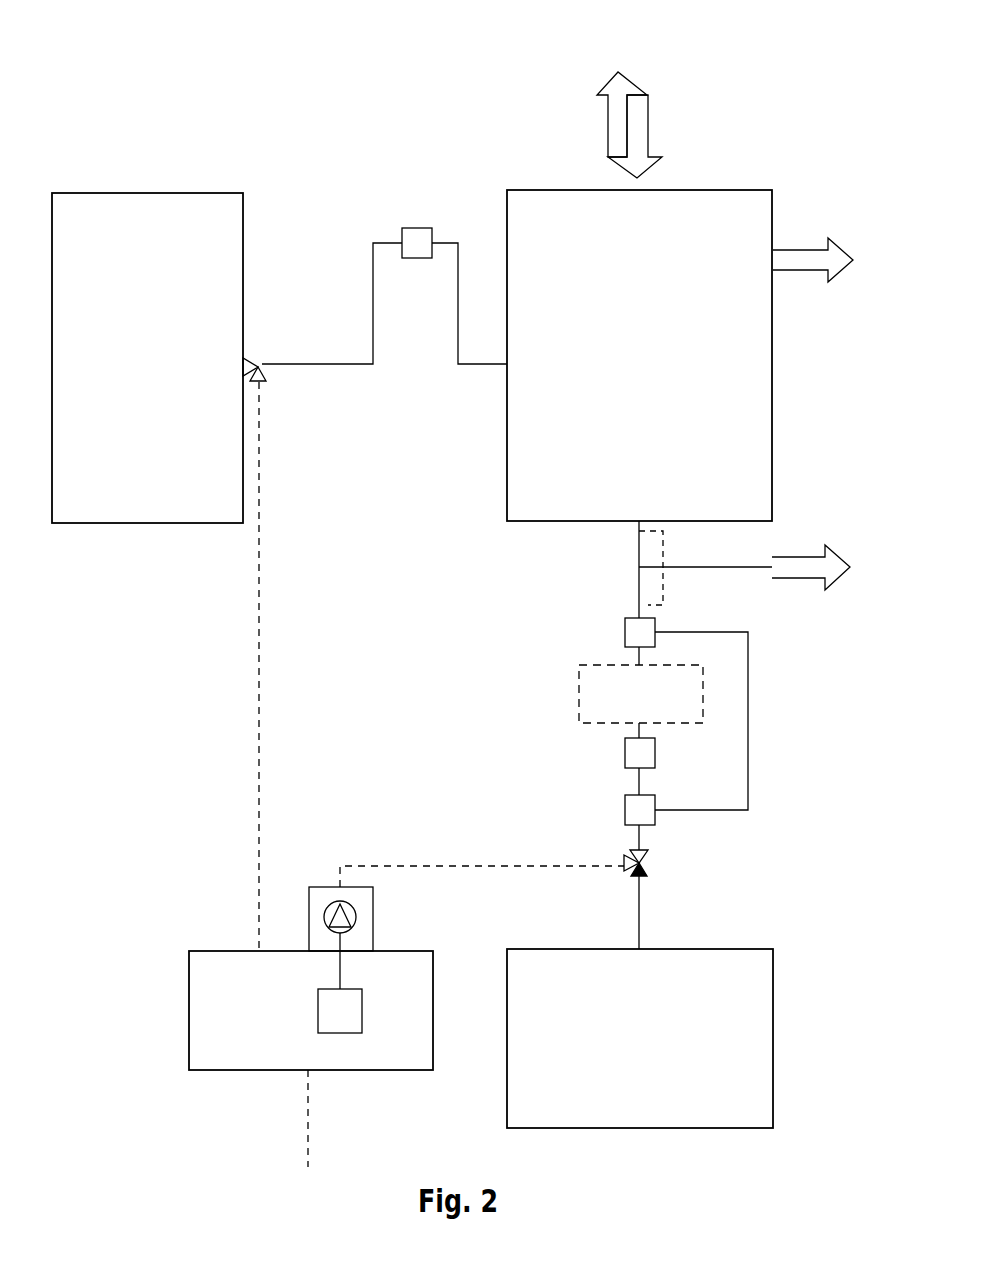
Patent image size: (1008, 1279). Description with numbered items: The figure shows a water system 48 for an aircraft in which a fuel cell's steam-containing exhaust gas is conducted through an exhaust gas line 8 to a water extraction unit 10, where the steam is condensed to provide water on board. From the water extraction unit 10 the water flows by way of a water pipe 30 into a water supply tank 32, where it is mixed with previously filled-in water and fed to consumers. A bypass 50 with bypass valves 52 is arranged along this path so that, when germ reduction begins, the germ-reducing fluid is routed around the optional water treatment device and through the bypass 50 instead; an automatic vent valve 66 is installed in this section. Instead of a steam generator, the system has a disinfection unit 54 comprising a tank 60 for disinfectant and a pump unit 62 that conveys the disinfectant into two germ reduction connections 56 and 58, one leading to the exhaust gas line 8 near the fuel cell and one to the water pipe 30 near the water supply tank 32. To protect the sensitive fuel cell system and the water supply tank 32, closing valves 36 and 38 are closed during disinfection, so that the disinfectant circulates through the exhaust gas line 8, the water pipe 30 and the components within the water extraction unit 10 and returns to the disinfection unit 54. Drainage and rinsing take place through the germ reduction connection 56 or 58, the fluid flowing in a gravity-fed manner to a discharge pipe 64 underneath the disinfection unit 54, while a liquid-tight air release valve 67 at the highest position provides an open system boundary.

The water system 48 is at (339, 110).
The water extraction unit 10 is at (726, 202).
The liquid-tight air release valve 67 is at (415, 228).
The exhaust gas line 8 is at (323, 368).
The closing valve 36 is at (244, 365).
The germ reduction connection 58 is at (270, 364).
The bypass valve 52 is at (625, 628).
The automatic vent valve 66 is at (625, 748).
The bypass 50 is at (762, 714).
The water pipe 30 is at (641, 834).
The closing valve 38 is at (648, 870).
The germ reduction connection 56 is at (623, 865).
The pump unit 62 is at (337, 908).
The disinfection unit 54 is at (208, 1028).
The tank 60 is at (347, 1026).
The discharge pipe 64 is at (306, 1143).
The water supply tank 32 is at (705, 1097).